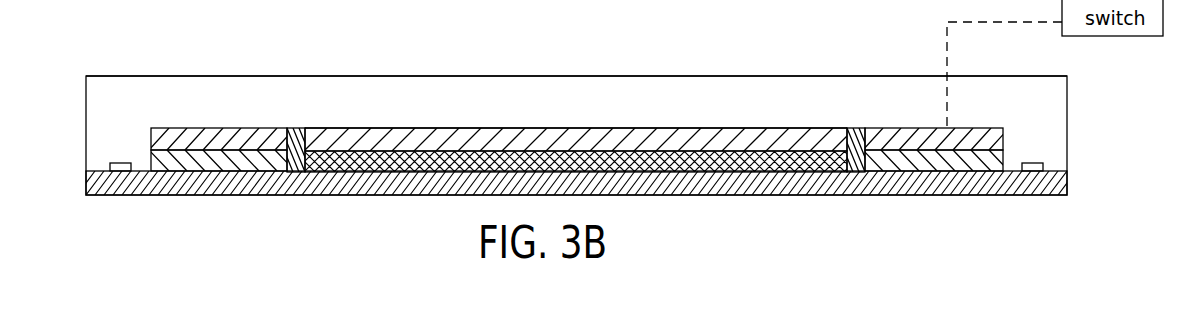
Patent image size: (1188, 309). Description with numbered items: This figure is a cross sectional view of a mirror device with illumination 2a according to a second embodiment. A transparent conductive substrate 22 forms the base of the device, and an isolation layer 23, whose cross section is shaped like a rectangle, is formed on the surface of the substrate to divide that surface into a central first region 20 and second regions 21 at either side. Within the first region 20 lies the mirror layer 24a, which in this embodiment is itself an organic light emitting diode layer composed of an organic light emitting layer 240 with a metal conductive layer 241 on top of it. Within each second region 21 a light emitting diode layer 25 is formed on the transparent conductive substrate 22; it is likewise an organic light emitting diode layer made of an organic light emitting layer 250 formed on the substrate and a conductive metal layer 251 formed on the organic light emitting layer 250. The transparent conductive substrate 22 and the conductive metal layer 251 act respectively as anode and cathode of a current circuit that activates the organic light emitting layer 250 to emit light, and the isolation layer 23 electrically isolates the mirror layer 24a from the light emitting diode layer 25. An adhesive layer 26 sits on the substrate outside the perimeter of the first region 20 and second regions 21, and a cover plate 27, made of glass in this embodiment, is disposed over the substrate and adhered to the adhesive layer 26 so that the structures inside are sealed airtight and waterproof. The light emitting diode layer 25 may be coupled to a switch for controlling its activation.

The mirror device with illumination 2a is at (74, 70).
The first region 20 is at (573, 129).
The second region 21 is at (236, 110).
The transparent conductive substrate 22 is at (1068, 183).
The isolation layer 23 is at (297, 128).
The mirror layer 24a is at (426, 118).
The organic light emitting layer 240 is at (763, 158).
The metal conductive layer 241 is at (713, 137).
The light emitting diode layer 25 is at (578, 107).
The organic light emitting layer 250 is at (151, 160).
The conductive metal layer 251 is at (151, 137).
The adhesive layer 26 is at (100, 170).
The cover plate 27 is at (579, 76).